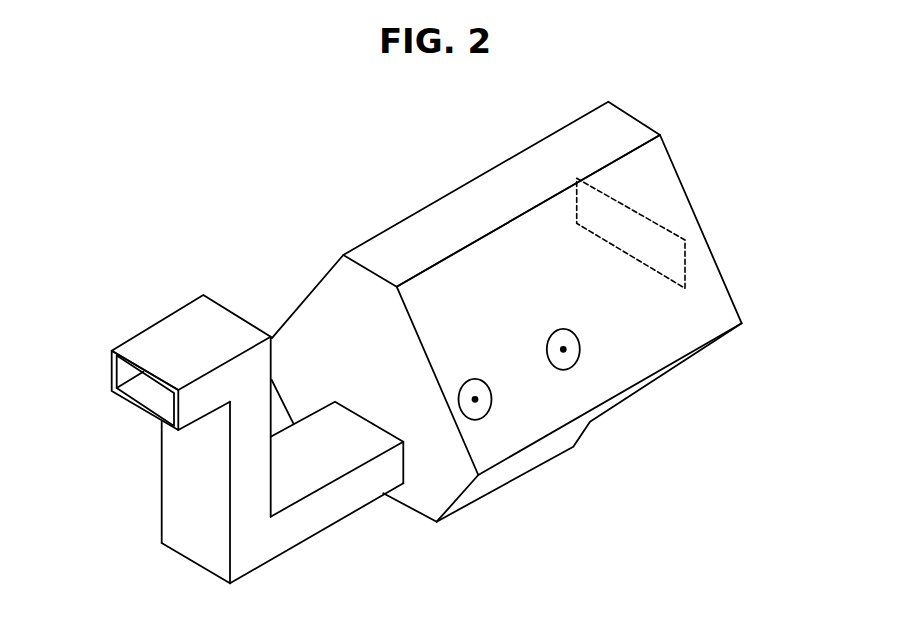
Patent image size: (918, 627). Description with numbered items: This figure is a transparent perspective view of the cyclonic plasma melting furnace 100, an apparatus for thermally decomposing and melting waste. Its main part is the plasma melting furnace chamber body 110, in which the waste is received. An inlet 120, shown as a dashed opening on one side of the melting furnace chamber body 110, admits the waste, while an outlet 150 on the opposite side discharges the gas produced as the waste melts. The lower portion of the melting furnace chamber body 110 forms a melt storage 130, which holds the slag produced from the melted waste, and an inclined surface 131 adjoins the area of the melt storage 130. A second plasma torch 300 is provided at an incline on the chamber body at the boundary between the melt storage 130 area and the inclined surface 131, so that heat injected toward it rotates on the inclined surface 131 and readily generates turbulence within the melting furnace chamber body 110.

The cyclonic plasma melting furnace 100 is at (184, 197).
The plasma melting furnace chamber body 110 is at (404, 196).
The inlet 120 is at (668, 242).
The melt storage 130 is at (503, 482).
The inclined surface 131 is at (643, 390).
The outlet 150 is at (142, 395).
The second plasma torch 300 is at (581, 350).